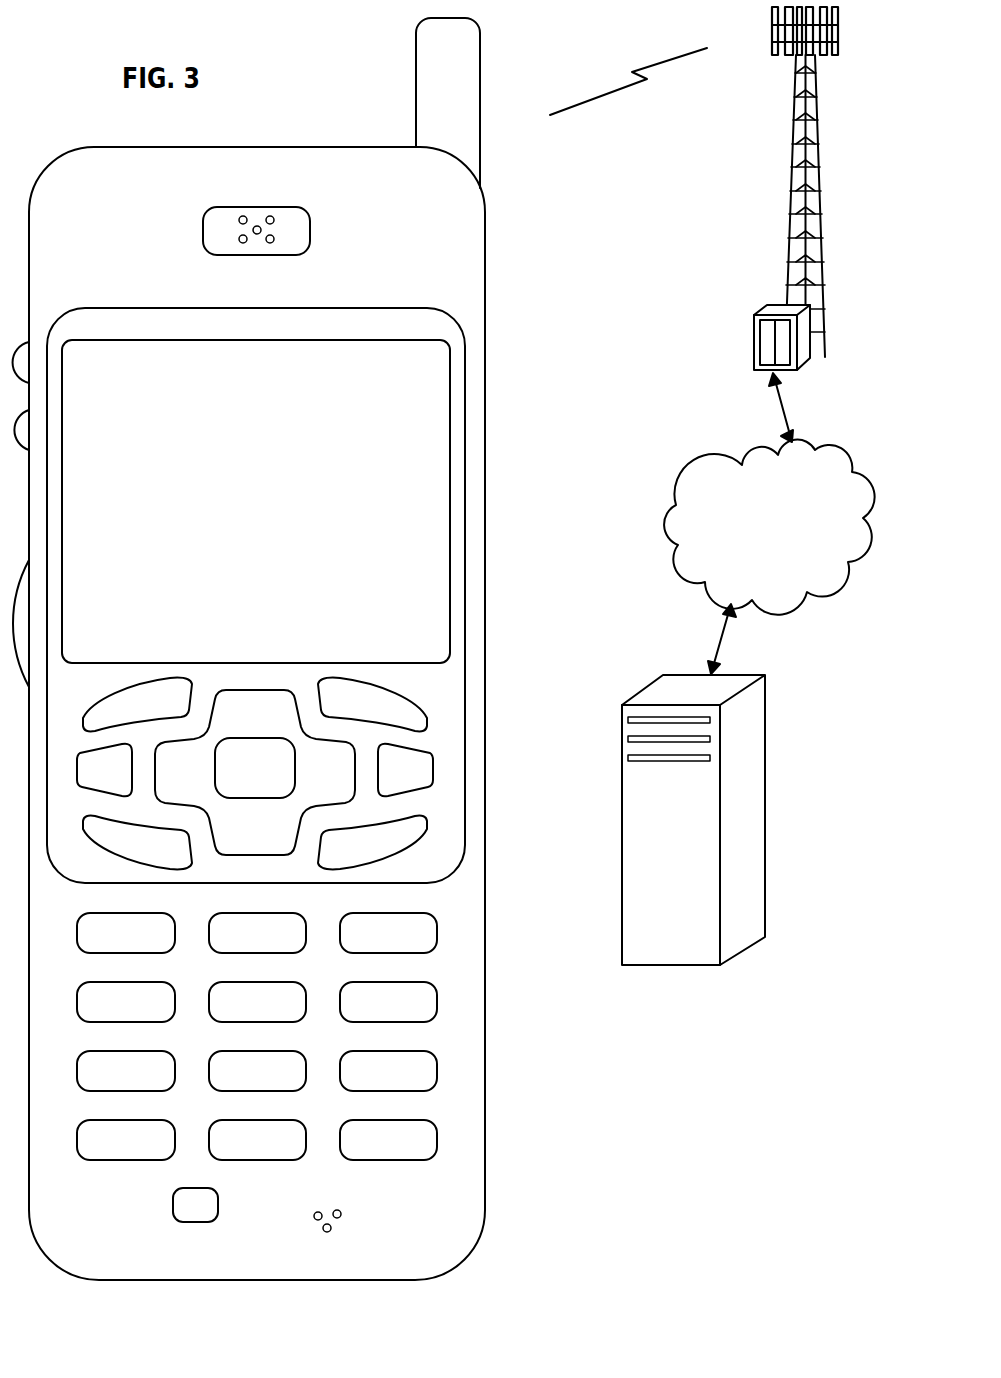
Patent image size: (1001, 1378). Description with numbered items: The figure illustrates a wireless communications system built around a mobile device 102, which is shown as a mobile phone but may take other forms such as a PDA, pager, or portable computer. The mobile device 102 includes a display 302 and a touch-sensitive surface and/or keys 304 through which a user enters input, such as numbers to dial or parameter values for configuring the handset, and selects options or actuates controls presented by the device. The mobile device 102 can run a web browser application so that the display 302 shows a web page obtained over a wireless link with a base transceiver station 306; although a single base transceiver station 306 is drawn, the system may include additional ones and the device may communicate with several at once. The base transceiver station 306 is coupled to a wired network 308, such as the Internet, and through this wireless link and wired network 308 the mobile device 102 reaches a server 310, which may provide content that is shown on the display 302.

The mobile device 102 is at (80, 1277).
The display 302 is at (450, 352).
The keys 304 is at (498, 1162).
The base transceiver station 306 is at (788, 203).
The wired network 308 is at (690, 576).
The server 310 is at (668, 966).